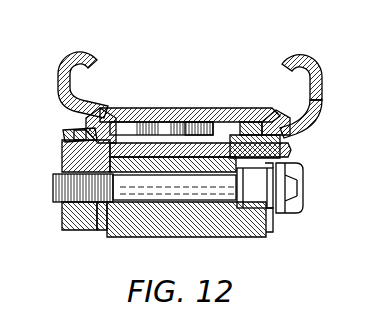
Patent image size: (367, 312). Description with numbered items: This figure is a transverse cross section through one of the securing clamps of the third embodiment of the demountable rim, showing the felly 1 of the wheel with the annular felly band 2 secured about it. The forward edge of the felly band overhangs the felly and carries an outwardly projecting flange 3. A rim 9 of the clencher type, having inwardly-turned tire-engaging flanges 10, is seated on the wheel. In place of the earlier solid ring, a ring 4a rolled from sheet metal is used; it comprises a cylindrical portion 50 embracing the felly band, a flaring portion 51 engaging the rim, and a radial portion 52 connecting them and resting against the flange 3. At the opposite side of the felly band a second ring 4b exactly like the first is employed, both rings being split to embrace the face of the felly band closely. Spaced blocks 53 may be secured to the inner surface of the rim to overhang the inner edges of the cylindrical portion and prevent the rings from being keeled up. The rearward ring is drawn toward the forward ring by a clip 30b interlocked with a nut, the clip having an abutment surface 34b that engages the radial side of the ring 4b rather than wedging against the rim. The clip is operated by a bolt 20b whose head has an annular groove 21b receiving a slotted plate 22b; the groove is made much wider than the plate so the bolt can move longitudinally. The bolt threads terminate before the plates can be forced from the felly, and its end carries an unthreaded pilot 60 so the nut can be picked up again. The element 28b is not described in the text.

The felly 1 is at (234, 227).
The felly band 2 is at (168, 152).
The flange 3 is at (292, 146).
The ring 4a is at (265, 124).
The second ring 4b is at (99, 110).
The rim 9 is at (146, 108).
The tire-engaging flanges 10 is at (90, 61).
The bolt 20b is at (174, 187).
The annular groove 21b is at (255, 185).
The slotted plate 22b is at (272, 223).
The block 28b is at (62, 162).
The clip 30b is at (74, 134).
The abutment surface 34b is at (78, 133).
The cylindrical portion 50 is at (238, 133).
The flaring portion 51 is at (318, 120).
The radial portion 52 is at (250, 122).
The spaced blocks 53 is at (197, 125).
The pilot 60 is at (62, 197).